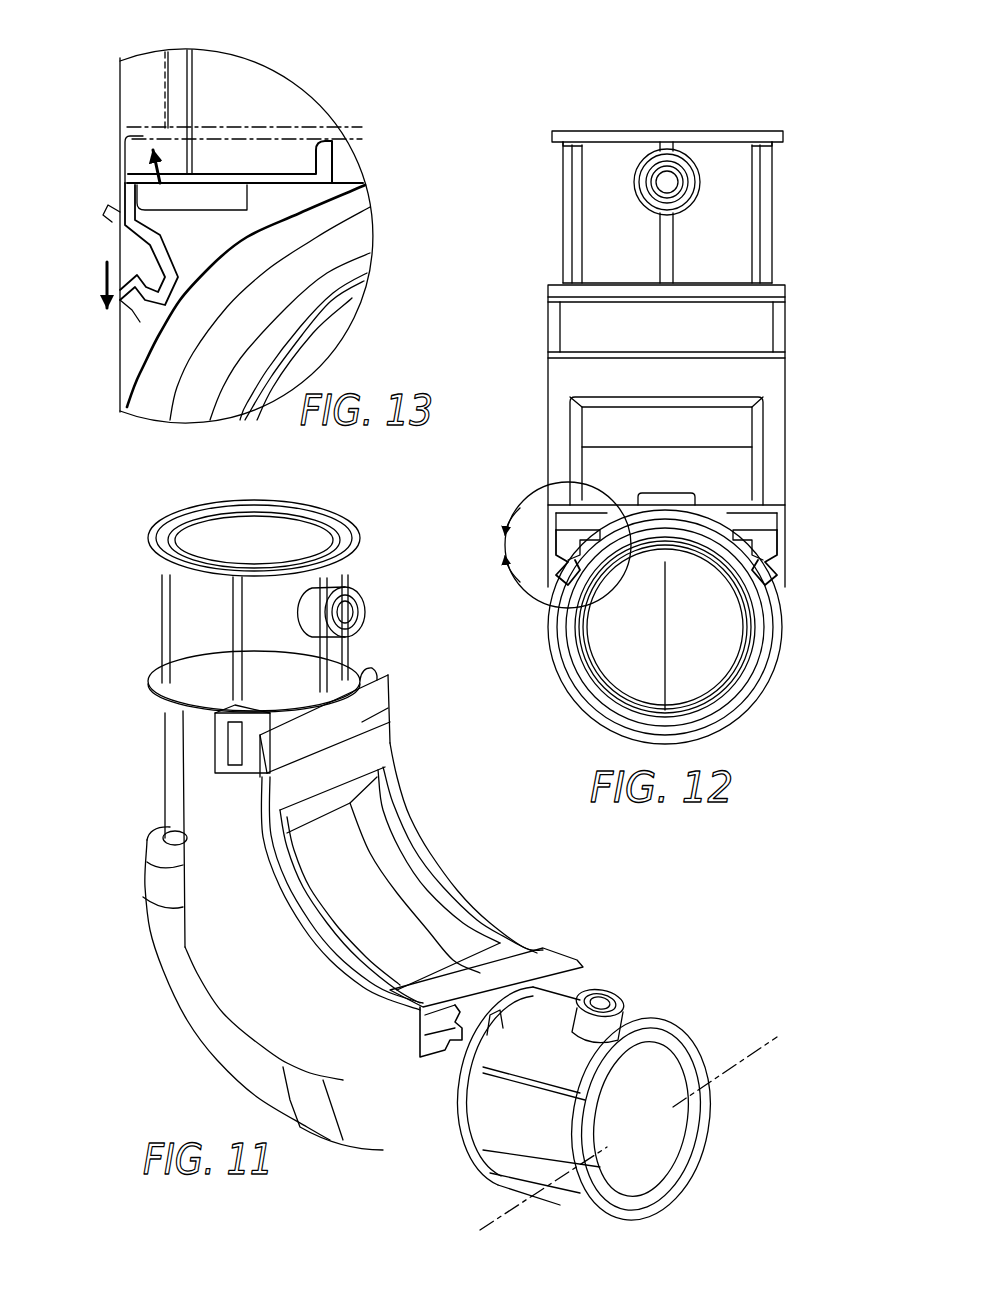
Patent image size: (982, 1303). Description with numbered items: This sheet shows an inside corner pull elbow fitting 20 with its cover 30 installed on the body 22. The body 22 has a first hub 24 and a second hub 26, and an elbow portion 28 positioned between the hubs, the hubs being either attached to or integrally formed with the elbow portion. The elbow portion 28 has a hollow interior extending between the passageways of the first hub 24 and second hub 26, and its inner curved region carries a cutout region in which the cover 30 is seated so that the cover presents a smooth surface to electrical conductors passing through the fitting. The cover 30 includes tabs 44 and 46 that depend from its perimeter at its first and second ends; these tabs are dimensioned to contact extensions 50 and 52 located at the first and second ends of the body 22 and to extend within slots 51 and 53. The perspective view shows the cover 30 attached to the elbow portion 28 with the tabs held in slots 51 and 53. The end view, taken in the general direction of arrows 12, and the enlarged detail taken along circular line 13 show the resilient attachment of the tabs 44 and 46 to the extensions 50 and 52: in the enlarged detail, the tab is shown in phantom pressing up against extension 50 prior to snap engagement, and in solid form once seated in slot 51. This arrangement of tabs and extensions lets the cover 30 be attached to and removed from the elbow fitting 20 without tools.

In FIG. 11, the arrows 12- 12 is at (512, 1217).
In FIG. 12, the circular line 13 is at (562, 545).
In FIG. 12, the inside corner pull elbow fitting 20 is at (709, 436).
In FIG. 11, the inside corner pull elbow fitting 20 is at (474, 933).
In FIG. 11, the body 22 is at (235, 968).
In FIG. 12, the first hub 24 is at (735, 207).
In FIG. 11, the first hub 24 is at (190, 605).
In FIG. 12, the second hub 26 is at (665, 627).
In FIG. 11, the second hub 26 is at (540, 1135).
In FIG. 11, the elbow portion 28 is at (257, 1003).
In FIG. 12, the cover 30 is at (780, 472).
In FIG. 11, the cover 30 is at (432, 842).
In FIG. 11, the tab 44 is at (237, 743).
In FIG. 13, the tab 46 is at (110, 195).
In FIG. 12, the tab 46 is at (783, 555).
In FIG. 11, the tab 46 is at (428, 1015).
In FIG. 11, the extension 50 is at (363, 675).
In FIG. 11, the slot 51 is at (218, 728).
In FIG. 13, the extension 52 is at (177, 237).
In FIG. 12, the extension 52 is at (757, 540).
In FIG. 11, the extension 52 is at (470, 1040).
In FIG. 13, the slot 53 is at (145, 317).
In FIG. 11, the slot 53 is at (455, 1068).